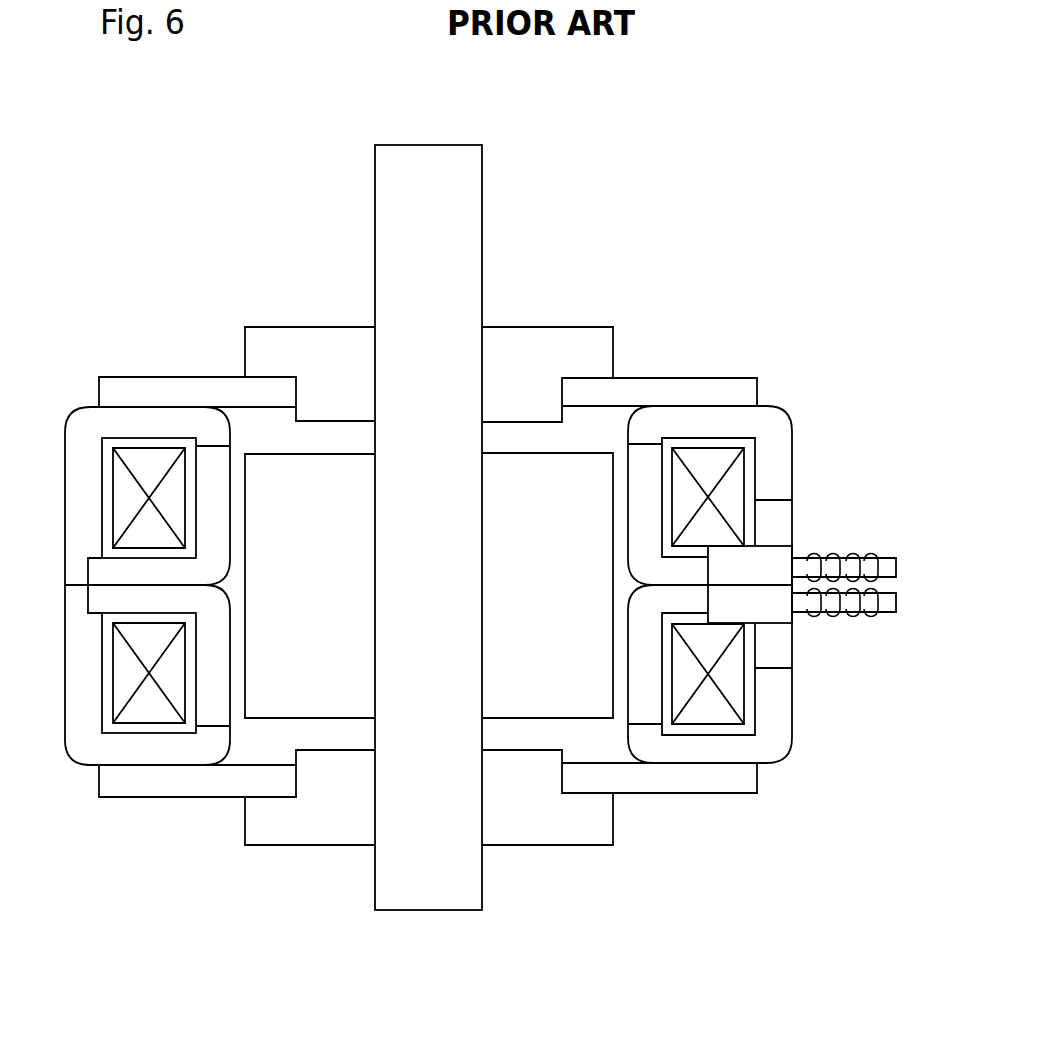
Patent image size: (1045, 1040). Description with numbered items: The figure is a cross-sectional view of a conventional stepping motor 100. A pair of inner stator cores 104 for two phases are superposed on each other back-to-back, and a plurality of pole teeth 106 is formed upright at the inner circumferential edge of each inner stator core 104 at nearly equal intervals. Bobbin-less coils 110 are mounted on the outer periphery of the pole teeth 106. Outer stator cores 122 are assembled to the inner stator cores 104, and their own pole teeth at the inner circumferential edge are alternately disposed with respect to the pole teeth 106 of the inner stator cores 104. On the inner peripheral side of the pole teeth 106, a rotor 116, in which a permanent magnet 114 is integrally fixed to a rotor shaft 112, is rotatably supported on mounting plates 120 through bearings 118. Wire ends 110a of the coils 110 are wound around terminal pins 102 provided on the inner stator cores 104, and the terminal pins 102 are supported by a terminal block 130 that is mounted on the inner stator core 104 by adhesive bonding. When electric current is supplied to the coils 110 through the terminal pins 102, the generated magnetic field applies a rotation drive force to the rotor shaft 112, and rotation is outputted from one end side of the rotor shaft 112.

The stepping motor 100 is at (679, 131).
The terminal pins 102 is at (885, 563).
The inner stator cores 104 is at (212, 567).
The pole teeth 106 is at (212, 523).
The bobbin-less coils 110 is at (730, 487).
The wire ends 110a is at (847, 557).
The rotor shaft 112 is at (390, 180).
The magnet 114 is at (337, 468).
The rotor 116 is at (252, 135).
The bearings 118 is at (543, 343).
The mounting plates 120 is at (697, 387).
The outer stator cores 122 is at (773, 430).
The terminal block 130 is at (772, 557).